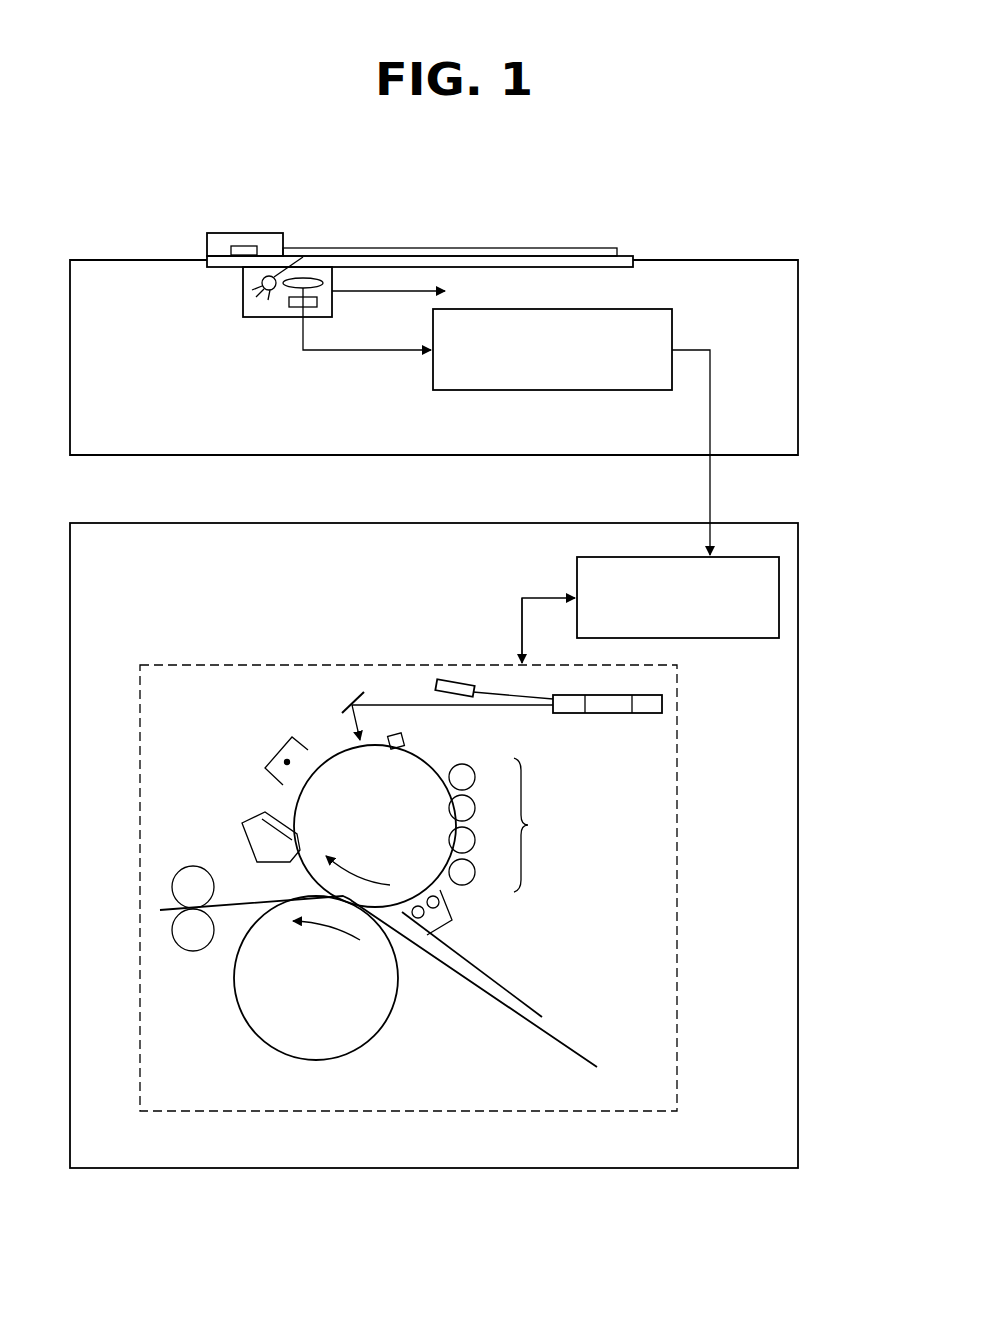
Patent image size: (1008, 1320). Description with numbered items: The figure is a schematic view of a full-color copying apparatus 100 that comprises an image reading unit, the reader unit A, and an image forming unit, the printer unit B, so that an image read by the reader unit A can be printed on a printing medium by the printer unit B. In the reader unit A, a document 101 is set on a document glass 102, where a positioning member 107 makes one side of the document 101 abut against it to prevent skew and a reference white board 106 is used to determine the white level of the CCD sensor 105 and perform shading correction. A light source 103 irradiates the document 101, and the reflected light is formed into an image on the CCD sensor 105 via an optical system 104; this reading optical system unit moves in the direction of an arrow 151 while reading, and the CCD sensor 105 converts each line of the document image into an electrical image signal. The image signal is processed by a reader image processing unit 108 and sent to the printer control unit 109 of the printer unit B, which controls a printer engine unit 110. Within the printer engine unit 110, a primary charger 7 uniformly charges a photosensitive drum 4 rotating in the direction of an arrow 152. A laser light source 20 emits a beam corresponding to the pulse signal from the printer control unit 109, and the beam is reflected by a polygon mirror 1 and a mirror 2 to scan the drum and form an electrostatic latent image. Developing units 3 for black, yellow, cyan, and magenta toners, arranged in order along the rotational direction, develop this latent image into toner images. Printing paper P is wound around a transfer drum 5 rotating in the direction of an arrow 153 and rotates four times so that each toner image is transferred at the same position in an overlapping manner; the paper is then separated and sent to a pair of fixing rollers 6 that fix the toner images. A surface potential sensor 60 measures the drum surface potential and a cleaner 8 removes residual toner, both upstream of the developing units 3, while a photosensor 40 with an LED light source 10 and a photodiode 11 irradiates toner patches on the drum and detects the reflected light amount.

The full-color copying apparatus 100 is at (752, 205).
The document 101 is at (527, 247).
The document glass 102 is at (620, 254).
The light source 103 is at (243, 278).
The optical system 104 is at (290, 286).
The CCD sensor 105 is at (297, 309).
The reference white board 106 is at (240, 245).
The positioning member 107 is at (272, 232).
The reader image processing unit 108 is at (672, 337).
The printer control unit 109 is at (712, 640).
The printer engine unit 110 is at (677, 952).
The arrow 151 is at (398, 289).
The arrow 152 is at (363, 878).
The arrow 153 is at (330, 928).
The polygon mirror 1 is at (608, 714).
The mirror 2 is at (352, 699).
The developing units 3 is at (498, 825).
The photosensitive drum 4 is at (340, 746).
The transfer drum 5 is at (250, 1031).
The pair of fixing rollers 6 is at (172, 929).
The primary charger 7 is at (264, 748).
The cleaner 8 is at (245, 820).
The LED light source 10 is at (440, 896).
The photodiode 11 is at (421, 918).
The laser light source 20 is at (457, 680).
The photosensor 40 is at (455, 912).
The surface potential sensor 60 is at (403, 736).
The reader unit A is at (798, 337).
The printer unit B is at (798, 1038).
The printing paper P is at (517, 990).